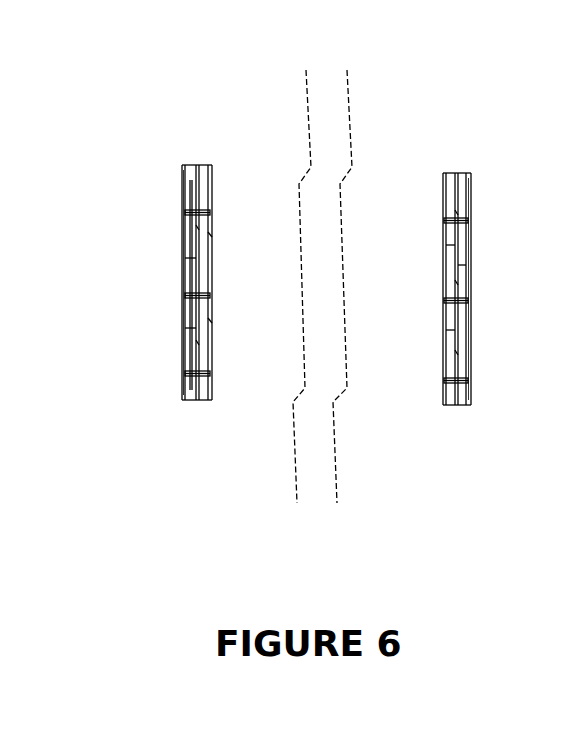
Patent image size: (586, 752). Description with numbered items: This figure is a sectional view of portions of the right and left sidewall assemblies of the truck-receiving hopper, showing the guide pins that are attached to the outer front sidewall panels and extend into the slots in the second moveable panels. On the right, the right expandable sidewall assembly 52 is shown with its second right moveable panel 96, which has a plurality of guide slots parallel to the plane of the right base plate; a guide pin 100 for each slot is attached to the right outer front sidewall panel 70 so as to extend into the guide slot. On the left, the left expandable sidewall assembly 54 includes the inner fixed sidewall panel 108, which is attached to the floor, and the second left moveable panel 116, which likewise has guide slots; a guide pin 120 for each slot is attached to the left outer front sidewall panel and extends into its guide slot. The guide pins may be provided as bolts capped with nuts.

The right expandable sidewall assembly 52 is at (490, 160).
The left expandable sidewall assembly 54 is at (150, 204).
The right outer front sidewall panel 70 is at (462, 245).
The second right moveable panel 96 is at (440, 263).
The guide pin 100 is at (466, 300).
The inner fixed sidewall panel 108 is at (190, 250).
The second left moveable panel 116 is at (214, 254).
The guide pin 120 is at (216, 211).